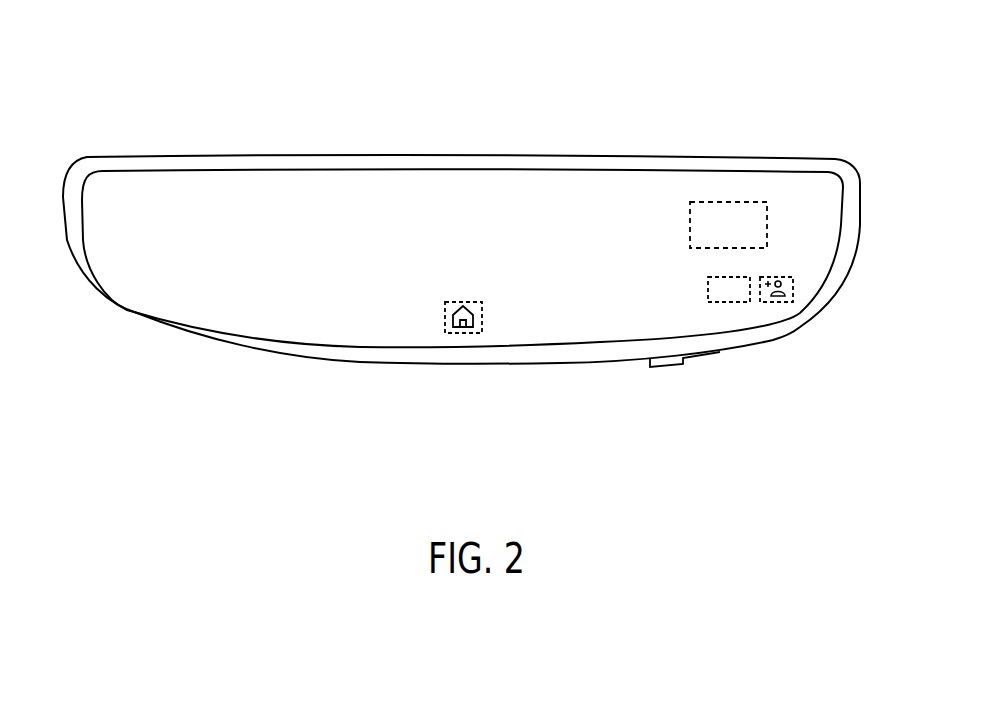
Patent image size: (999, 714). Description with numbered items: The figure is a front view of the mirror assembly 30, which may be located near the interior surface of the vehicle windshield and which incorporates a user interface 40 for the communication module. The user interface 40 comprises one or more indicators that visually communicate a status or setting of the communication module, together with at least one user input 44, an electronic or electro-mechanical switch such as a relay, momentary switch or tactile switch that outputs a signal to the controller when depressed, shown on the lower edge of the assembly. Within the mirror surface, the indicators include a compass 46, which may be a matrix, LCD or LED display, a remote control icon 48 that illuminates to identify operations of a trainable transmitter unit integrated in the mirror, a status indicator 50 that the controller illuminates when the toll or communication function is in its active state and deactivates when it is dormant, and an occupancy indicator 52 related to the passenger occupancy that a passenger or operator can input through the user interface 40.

The mirror assembly 30 is at (237, 121).
The user interface 40 is at (852, 143).
The user input 44 is at (668, 365).
The compass 46 is at (767, 225).
The remote control icon 48 is at (482, 318).
The status indicator 50 is at (730, 303).
The occupancy indicator 52 is at (793, 292).